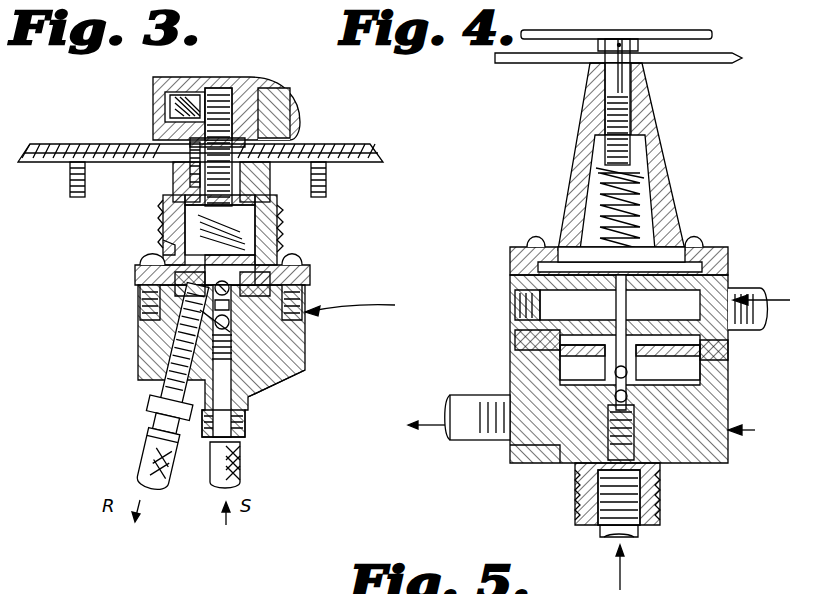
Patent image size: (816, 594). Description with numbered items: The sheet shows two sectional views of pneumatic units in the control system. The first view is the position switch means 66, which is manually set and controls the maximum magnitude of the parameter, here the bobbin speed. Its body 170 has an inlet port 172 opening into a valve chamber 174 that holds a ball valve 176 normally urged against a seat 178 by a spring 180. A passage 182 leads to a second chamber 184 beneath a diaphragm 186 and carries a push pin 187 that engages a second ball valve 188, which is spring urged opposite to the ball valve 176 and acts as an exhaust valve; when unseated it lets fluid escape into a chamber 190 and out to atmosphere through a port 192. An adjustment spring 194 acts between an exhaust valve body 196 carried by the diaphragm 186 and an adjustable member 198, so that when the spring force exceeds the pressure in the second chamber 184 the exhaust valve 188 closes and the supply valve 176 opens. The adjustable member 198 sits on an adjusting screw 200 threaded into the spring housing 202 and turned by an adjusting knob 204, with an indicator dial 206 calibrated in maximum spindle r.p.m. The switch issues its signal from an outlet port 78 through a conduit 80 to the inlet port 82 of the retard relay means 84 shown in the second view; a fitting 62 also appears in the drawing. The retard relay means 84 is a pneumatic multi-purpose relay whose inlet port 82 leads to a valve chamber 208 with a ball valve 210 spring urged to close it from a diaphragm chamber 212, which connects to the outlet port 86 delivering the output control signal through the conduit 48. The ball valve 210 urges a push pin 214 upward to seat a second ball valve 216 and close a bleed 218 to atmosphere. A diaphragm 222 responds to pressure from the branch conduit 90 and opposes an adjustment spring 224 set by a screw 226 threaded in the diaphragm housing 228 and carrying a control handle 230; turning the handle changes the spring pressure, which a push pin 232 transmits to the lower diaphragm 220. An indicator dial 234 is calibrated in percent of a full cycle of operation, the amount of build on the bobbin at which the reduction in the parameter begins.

In FIG. 3, the adjusting knob 204 is at (305, 100).
In FIG. 3, the adjusting screw 200 is at (255, 138).
In FIG. 3, the indicator dial 206 is at (383, 150).
In FIG. 3, the adjustable member 198 is at (170, 205).
In FIG. 3, the chamber 190 is at (185, 222).
In FIG. 3, the spring housing 202 is at (160, 232).
In FIG. 3, the port 192 is at (172, 250).
In FIG. 3, the adjustment spring 194 is at (245, 235).
In FIG. 3, the second ball valve 188 is at (280, 240).
In FIG. 3, the diaphragm 186 is at (255, 262).
In FIG. 3, the exhaust valve body 196 is at (150, 280).
In FIG. 3, the second chamber 184 is at (230, 286).
In FIG. 3, the seat 178 is at (270, 292).
In FIG. 3, the position switch means 66 is at (356, 301).
In FIG. 3, the body 170 is at (305, 355).
In FIG. 3, the ball valve 176 is at (230, 322).
In FIG. 3, the valve chamber 174 is at (235, 340).
In FIG. 3, the passage 182 is at (218, 302).
In FIG. 3, the push pin 187 is at (200, 312).
In FIG. 3, the spring 180 is at (285, 400).
In FIG. 3, the inlet port 172 is at (247, 425).
In FIG. 3, the outlet port 78 is at (150, 395).
In FIG. 3, the conduit 80 is at (140, 458).
In FIG. 4, the conduit 80 is at (598, 530).
In FIG. 3, the fitting 62 is at (240, 470).
In FIG. 4, the control handle 230 is at (712, 36).
In FIG. 4, the indicator dial 234 is at (752, 67).
In FIG. 4, the diaphragm housing 228 is at (575, 160).
In FIG. 4, the screw 226 is at (632, 115).
In FIG. 4, the adjustment spring 224 is at (640, 210).
In FIG. 4, the diaphragm 222 is at (728, 252).
In FIG. 4, the branch conduit 90 is at (735, 288).
In FIG. 4, the push pin 232 is at (515, 300).
In FIG. 4, the lower diaphragm 220 is at (515, 340).
In FIG. 4, the second ball valve 216 is at (610, 366).
In FIG. 4, the push pin 214 is at (668, 366).
In FIG. 4, the bleed 218 is at (728, 350).
In FIG. 4, the diaphragm chamber 212 is at (700, 372).
In FIG. 4, the ball valve 210 is at (640, 398).
In FIG. 4, the conduit 48 is at (475, 380).
In FIG. 4, the retard relay means 84 is at (755, 434).
In FIG. 4, the outlet port 86 is at (510, 445).
In FIG. 4, the valve chamber 208 is at (590, 463).
In FIG. 4, the inlet port 82 is at (640, 535).